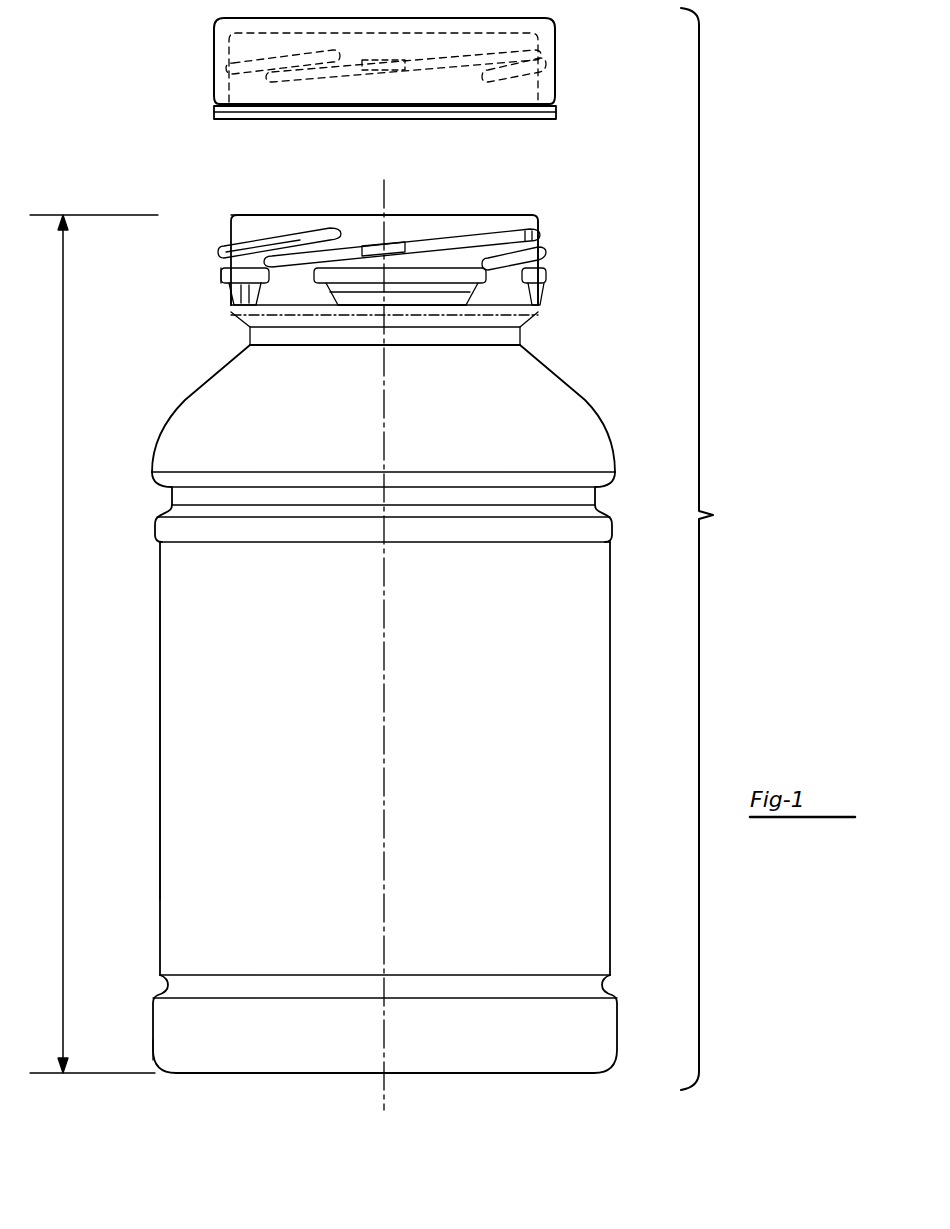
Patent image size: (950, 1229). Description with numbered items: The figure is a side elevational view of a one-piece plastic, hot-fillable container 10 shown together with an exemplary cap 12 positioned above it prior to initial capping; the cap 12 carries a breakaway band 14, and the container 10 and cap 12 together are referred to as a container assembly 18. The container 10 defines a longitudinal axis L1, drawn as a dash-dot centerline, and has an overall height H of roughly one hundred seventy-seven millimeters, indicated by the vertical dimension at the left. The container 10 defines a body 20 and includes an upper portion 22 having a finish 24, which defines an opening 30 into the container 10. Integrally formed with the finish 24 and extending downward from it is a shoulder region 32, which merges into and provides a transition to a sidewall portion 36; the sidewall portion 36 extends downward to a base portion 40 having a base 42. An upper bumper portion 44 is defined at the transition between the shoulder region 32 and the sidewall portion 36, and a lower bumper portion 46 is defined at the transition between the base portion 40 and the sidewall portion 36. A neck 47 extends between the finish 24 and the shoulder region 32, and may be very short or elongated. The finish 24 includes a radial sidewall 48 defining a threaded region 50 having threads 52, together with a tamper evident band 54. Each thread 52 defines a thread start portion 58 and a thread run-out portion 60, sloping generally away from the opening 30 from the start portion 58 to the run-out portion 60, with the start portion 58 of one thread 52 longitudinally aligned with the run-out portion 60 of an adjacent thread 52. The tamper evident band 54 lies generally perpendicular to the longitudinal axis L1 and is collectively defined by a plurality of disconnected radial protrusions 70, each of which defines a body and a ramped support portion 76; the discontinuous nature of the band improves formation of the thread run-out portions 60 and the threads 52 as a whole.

The container 10 is at (172, 200).
The cap 12 is at (215, 78).
The breakaway band 14 is at (215, 113).
The container assembly 18 is at (717, 549).
The body 20 is at (165, 700).
The upper portion 22 is at (192, 350).
The finish 24 is at (200, 265).
The opening 30 is at (460, 213).
The shoulder region 32 is at (175, 398).
The sidewall portion 36 is at (140, 620).
The base portion 40 is at (135, 1093).
The base 42 is at (278, 1075).
The upper bumper portion 44 is at (155, 527).
The lower bumper portion 46 is at (153, 1020).
The neck 47 is at (520, 338).
The radial sidewall 48 is at (347, 222).
The threaded region 50 is at (560, 218).
The thread 52 is at (262, 240).
The tamper evident band 54 is at (552, 278).
The thread start portion 58 is at (312, 232).
The thread run-out portion 60 is at (272, 262).
The radial protrusion 70 is at (440, 278).
The ramped support portion 76 is at (350, 300).
The longitudinal axis L1 is at (386, 382).
The overall height H is at (94, 644).